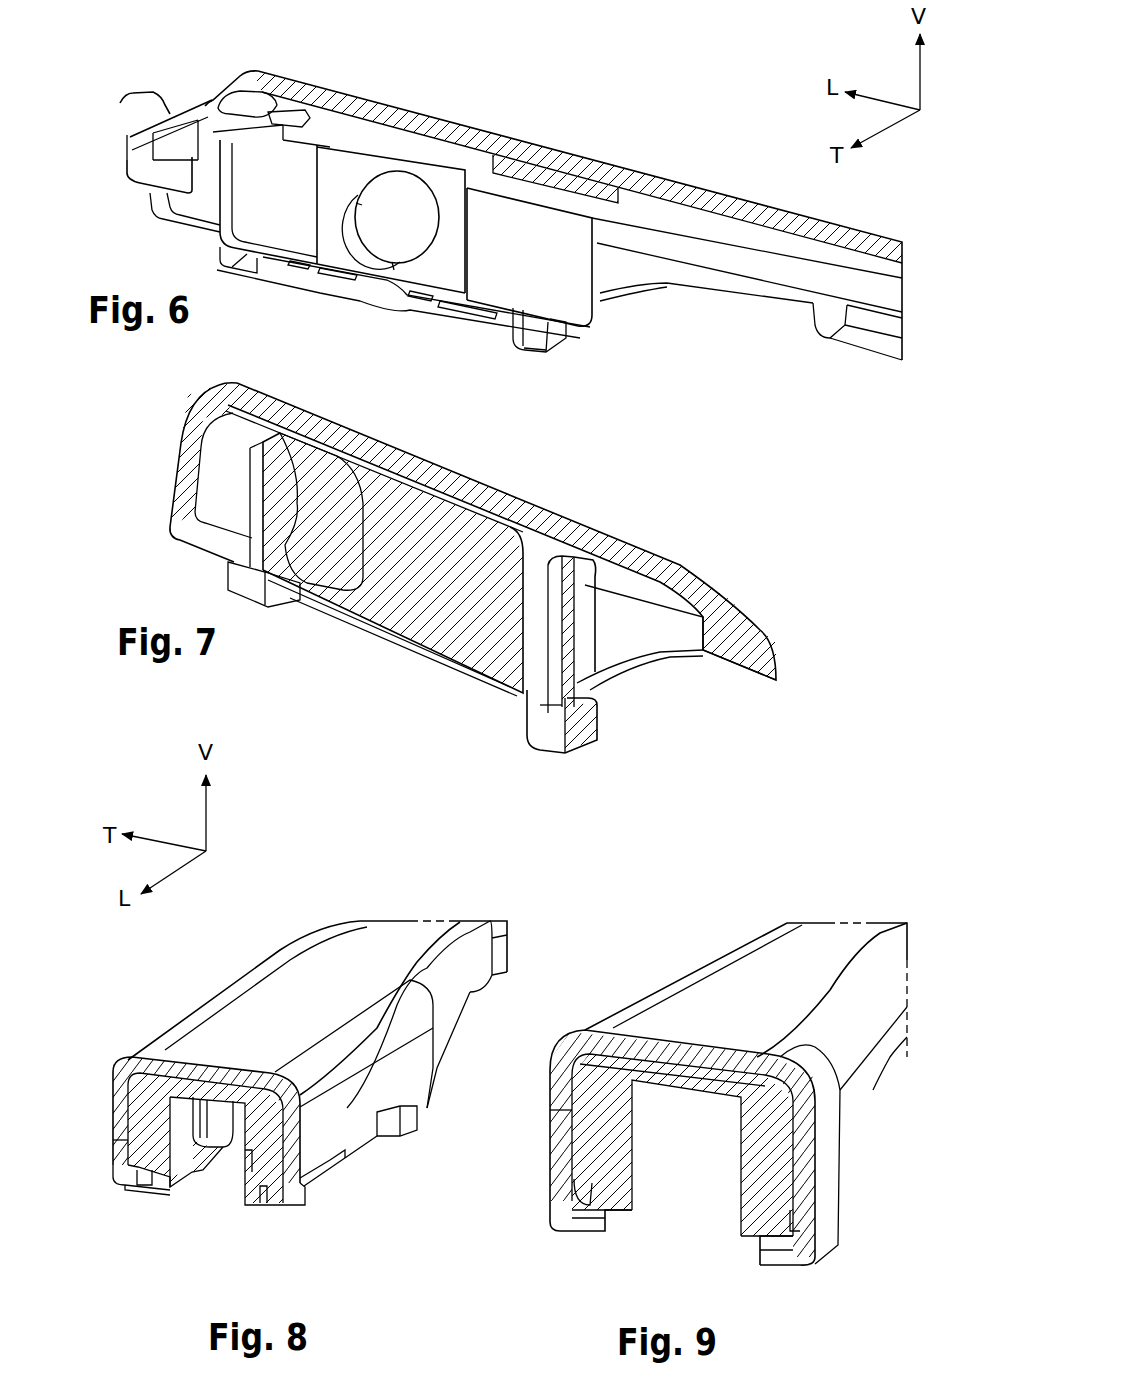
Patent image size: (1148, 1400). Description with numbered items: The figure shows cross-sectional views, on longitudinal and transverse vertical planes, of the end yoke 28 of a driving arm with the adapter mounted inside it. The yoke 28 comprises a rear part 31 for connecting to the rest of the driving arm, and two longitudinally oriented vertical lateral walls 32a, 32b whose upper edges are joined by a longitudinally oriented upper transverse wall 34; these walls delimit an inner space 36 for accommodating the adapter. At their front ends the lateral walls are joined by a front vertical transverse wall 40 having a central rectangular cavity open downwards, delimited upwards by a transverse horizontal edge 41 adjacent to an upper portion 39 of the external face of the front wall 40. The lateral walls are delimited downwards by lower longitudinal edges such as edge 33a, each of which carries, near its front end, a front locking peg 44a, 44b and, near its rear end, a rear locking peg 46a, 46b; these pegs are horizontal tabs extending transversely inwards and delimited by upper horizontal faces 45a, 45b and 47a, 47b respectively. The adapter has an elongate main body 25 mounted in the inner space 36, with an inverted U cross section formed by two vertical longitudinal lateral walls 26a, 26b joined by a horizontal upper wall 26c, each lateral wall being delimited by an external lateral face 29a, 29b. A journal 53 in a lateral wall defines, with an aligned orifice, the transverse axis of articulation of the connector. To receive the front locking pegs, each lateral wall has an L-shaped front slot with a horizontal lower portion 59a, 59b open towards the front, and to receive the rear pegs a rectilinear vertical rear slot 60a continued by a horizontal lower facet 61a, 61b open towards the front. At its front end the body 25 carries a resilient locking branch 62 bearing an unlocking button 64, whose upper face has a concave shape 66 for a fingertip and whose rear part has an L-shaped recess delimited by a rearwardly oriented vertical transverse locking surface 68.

In FIG. 6, the elongate main body 25 is at (344, 300).
In FIG. 8, the elongate main body 25 is at (333, 1182).
In FIG. 9, the lateral wall 26a is at (768, 1137).
In FIG. 6, the lateral wall 26b is at (258, 250).
In FIG. 7, the lateral wall 26b is at (393, 583).
In FIG. 9, the lateral wall 26b is at (600, 1127).
In FIG. 6, the horizontal upper wall 26c is at (332, 115).
In FIG. 8, the horizontal upper wall 26c is at (232, 1088).
In FIG. 9, the horizontal upper wall 26c is at (727, 1076).
In FIG. 6, the yoke 28 is at (785, 200).
In FIG. 7, the yoke 28 is at (700, 560).
In FIG. 8, the yoke 28 is at (512, 948).
In FIG. 9, the yoke 28 is at (872, 900).
In FIG. 8, the external lateral face 29a is at (302, 1090).
In FIG. 9, the external lateral face 29a is at (795, 1155).
In FIG. 8, the external lateral face 29b is at (114, 1117).
In FIG. 9, the external lateral face 29b is at (578, 1130).
In FIG. 6, the rear part 31 is at (852, 344).
In FIG. 8, the lateral wall 32a is at (343, 1048).
In FIG. 8, the lateral wall 32b is at (125, 1115).
In FIG. 8, the lower longitudinal edge 33a is at (349, 1157).
In FIG. 6, the upper transverse wall 34 is at (671, 184).
In FIG. 7, the upper transverse wall 34 is at (443, 480).
In FIG. 8, the upper transverse wall 34 is at (185, 1065).
In FIG. 9, the upper transverse wall 34 is at (660, 1045).
In FIG. 9, the inner space 36 is at (702, 1171).
In FIG. 6, the upper portion 39 is at (215, 102).
In FIG. 6, the front vertical transverse wall 40 is at (247, 84).
In FIG. 7, the front vertical transverse wall 40 is at (192, 450).
In FIG. 6, the transverse horizontal edge 41 is at (126, 168).
In FIG. 8, the front locking peg 44a is at (302, 1209).
In FIG. 6, the front locking peg 44b is at (233, 274).
In FIG. 7, the front locking peg 44b is at (276, 588).
In FIG. 8, the front locking peg 44b is at (136, 1180).
In FIG. 8, the upper horizontal face 45a is at (251, 1174).
In FIG. 7, the upper horizontal face 45b is at (318, 470).
In FIG. 8, the upper horizontal face 45b is at (197, 1162).
In FIG. 8, the rear locking peg 46a is at (406, 1142).
In FIG. 9, the rear locking peg 46a is at (790, 1262).
In FIG. 6, the rear locking peg 46b is at (586, 327).
In FIG. 7, the rear locking peg 46b is at (594, 736).
In FIG. 9, the rear locking peg 46b is at (576, 1230).
In FIG. 9, the upper horizontal face 47a is at (800, 1214).
In FIG. 7, the upper horizontal face 47b is at (584, 690).
In FIG. 9, the upper horizontal face 47b is at (583, 1183).
In FIG. 6, the journal 53 is at (410, 176).
In FIG. 8, the horizontal lower portion 59a is at (268, 1204).
In FIG. 7, the horizontal lower portion 59b is at (356, 573).
In FIG. 8, the horizontal lower portion 59b is at (152, 1176).
In FIG. 7, the vertical rear slot 60a is at (557, 620).
In FIG. 9, the horizontal lower facet 61a is at (771, 1258).
In FIG. 6, the horizontal lower facet 61b is at (530, 348).
In FIG. 7, the horizontal lower facet 61b is at (566, 752).
In FIG. 9, the horizontal lower facet 61b is at (600, 1222).
In FIG. 6, the resilient locking branch 62 is at (272, 112).
In FIG. 6, the unlocking button 64 is at (160, 143).
In FIG. 6, the concave shape 66 is at (150, 104).
In FIG. 6, the vertical transverse locking surface 68 is at (222, 108).